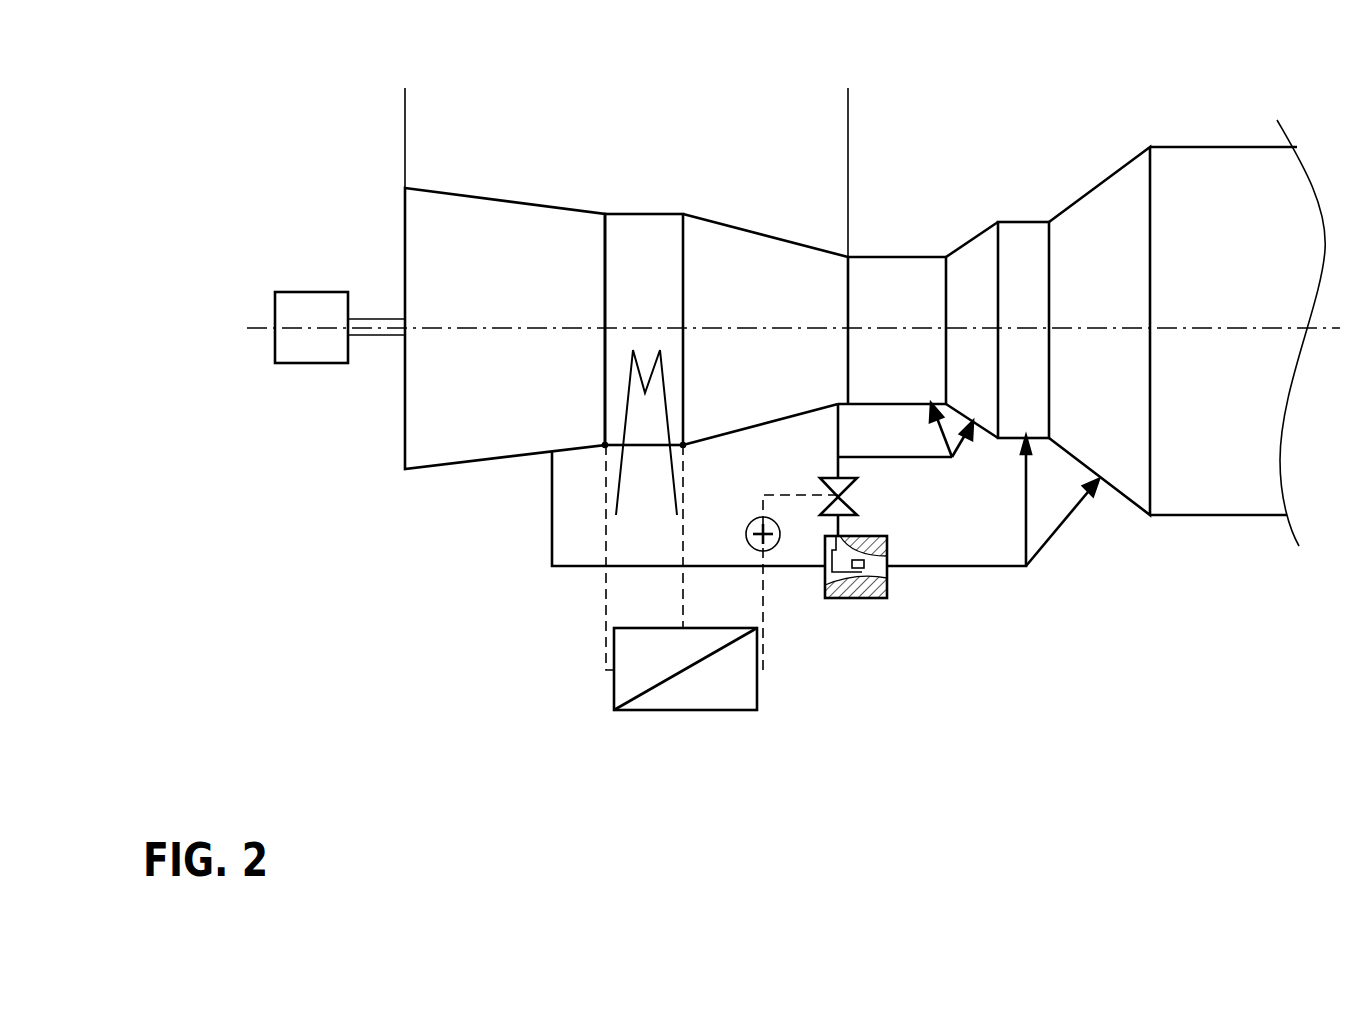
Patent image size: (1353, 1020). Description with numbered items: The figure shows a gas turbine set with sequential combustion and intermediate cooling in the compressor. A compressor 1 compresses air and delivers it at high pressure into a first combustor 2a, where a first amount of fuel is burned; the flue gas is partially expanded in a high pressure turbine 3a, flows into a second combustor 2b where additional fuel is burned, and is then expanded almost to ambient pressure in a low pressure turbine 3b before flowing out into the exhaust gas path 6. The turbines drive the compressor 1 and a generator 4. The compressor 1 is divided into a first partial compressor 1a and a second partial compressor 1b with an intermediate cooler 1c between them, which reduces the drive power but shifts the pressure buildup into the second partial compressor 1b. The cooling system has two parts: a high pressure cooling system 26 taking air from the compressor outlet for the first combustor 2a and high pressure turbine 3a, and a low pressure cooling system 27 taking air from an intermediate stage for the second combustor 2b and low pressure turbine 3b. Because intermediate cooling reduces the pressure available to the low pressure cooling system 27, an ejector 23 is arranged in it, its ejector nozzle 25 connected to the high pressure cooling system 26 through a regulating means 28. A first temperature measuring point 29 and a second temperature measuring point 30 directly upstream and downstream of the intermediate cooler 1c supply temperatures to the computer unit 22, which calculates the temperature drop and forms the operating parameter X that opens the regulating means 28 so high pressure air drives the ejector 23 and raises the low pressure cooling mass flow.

The compressor 1 is at (848, 100).
The first partial compressor 1a is at (481, 305).
The second partial compressor 1b is at (743, 305).
The intermediate cooler 1c is at (625, 305).
The first combustor 2a is at (878, 305).
The second combustor 2b is at (1004, 305).
The high pressure turbine 3a is at (954, 305).
The low pressure turbine 3b is at (1076, 305).
The generator 4 is at (301, 342).
The exhaust gas path 6 is at (1216, 305).
The computer unit 22 is at (660, 710).
The ejector 23 is at (855, 598).
The ejector nozzle 25 is at (865, 572).
The high pressure cooling system 26 is at (838, 435).
The low pressure cooling system 27 is at (578, 566).
The regulating means 28 is at (857, 495).
The first temperature measuring point 29 is at (605, 445).
The second temperature measuring point 30 is at (683, 445).